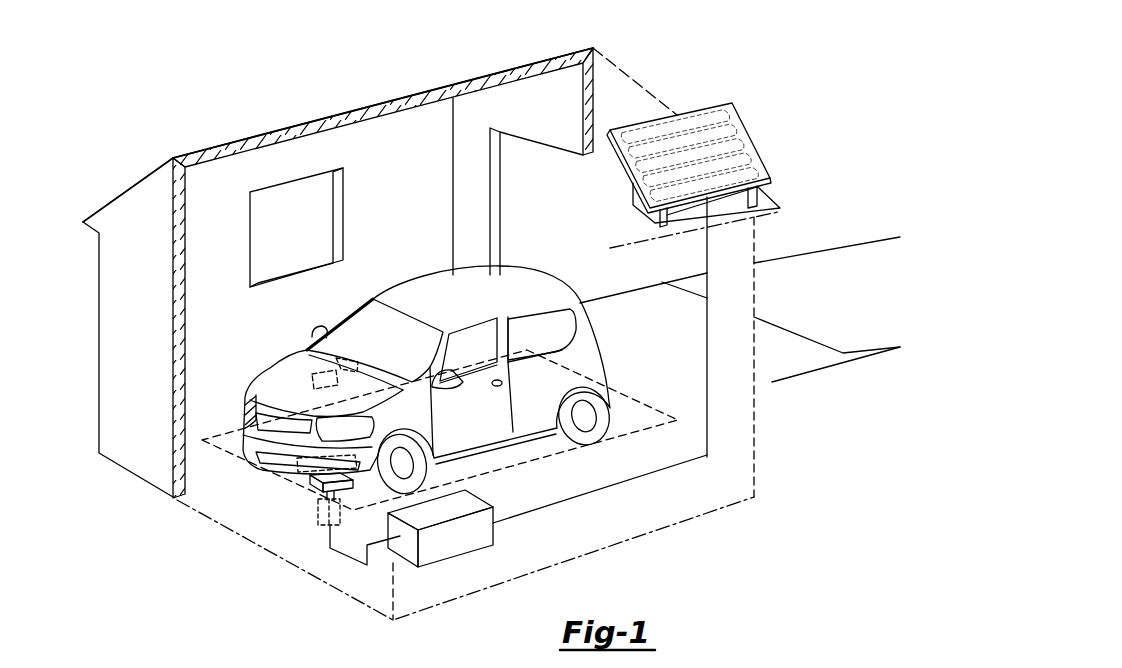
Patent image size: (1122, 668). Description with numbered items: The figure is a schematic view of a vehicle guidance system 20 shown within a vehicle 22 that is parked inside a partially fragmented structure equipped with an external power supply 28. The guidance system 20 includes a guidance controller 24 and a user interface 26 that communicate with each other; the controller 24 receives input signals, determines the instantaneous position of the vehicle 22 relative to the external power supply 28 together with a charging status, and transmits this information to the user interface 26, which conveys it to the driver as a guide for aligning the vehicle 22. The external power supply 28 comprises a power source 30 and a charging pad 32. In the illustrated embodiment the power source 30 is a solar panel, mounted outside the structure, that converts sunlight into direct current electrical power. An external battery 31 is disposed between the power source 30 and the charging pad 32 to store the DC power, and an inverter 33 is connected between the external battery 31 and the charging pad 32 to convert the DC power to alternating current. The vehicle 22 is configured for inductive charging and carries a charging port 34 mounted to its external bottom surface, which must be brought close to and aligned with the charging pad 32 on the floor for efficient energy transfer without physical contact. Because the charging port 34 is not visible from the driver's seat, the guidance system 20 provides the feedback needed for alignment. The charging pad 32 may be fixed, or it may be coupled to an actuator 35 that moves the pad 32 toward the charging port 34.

The vehicle guidance system 20 is at (301, 310).
The vehicle 22 is at (513, 283).
The guidance controller 24 is at (310, 387).
The user interface 26 is at (345, 360).
The external power supply 28 is at (618, 510).
The power source 30 is at (743, 127).
The external battery 31 is at (473, 538).
The charging pad 32 is at (327, 490).
The inverter 33 is at (427, 558).
The charging port 34 is at (308, 483).
The actuator 35 is at (316, 512).